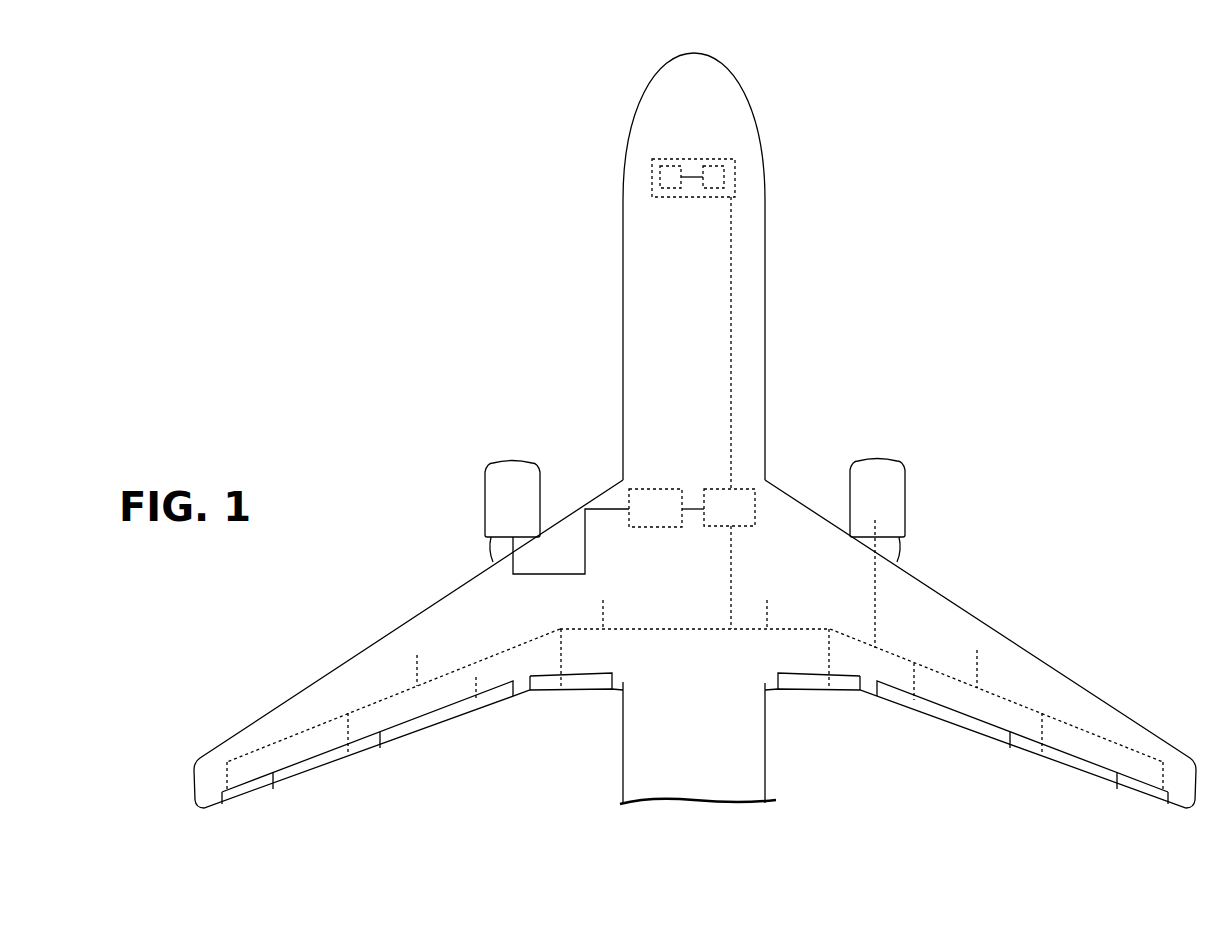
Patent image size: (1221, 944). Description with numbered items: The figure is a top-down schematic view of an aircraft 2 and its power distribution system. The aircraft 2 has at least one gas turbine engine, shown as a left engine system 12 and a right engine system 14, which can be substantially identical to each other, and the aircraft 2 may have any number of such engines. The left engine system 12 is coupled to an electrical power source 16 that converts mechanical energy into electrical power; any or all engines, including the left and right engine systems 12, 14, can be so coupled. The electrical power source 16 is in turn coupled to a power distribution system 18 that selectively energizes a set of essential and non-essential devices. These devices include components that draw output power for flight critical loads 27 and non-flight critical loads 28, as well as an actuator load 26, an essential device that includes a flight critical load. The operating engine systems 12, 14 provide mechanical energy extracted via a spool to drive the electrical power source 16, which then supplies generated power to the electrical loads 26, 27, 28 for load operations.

The aircraft 2 is at (510, 82).
The left engine system 12 is at (512, 470).
The right engine system 14 is at (887, 472).
The electrical power source 16 is at (653, 489).
The power distribution system 18 is at (745, 489).
The actuator load 26 is at (225, 800).
The flight critical loads 27 is at (660, 187).
The non-flight critical loads 28 is at (417, 655).